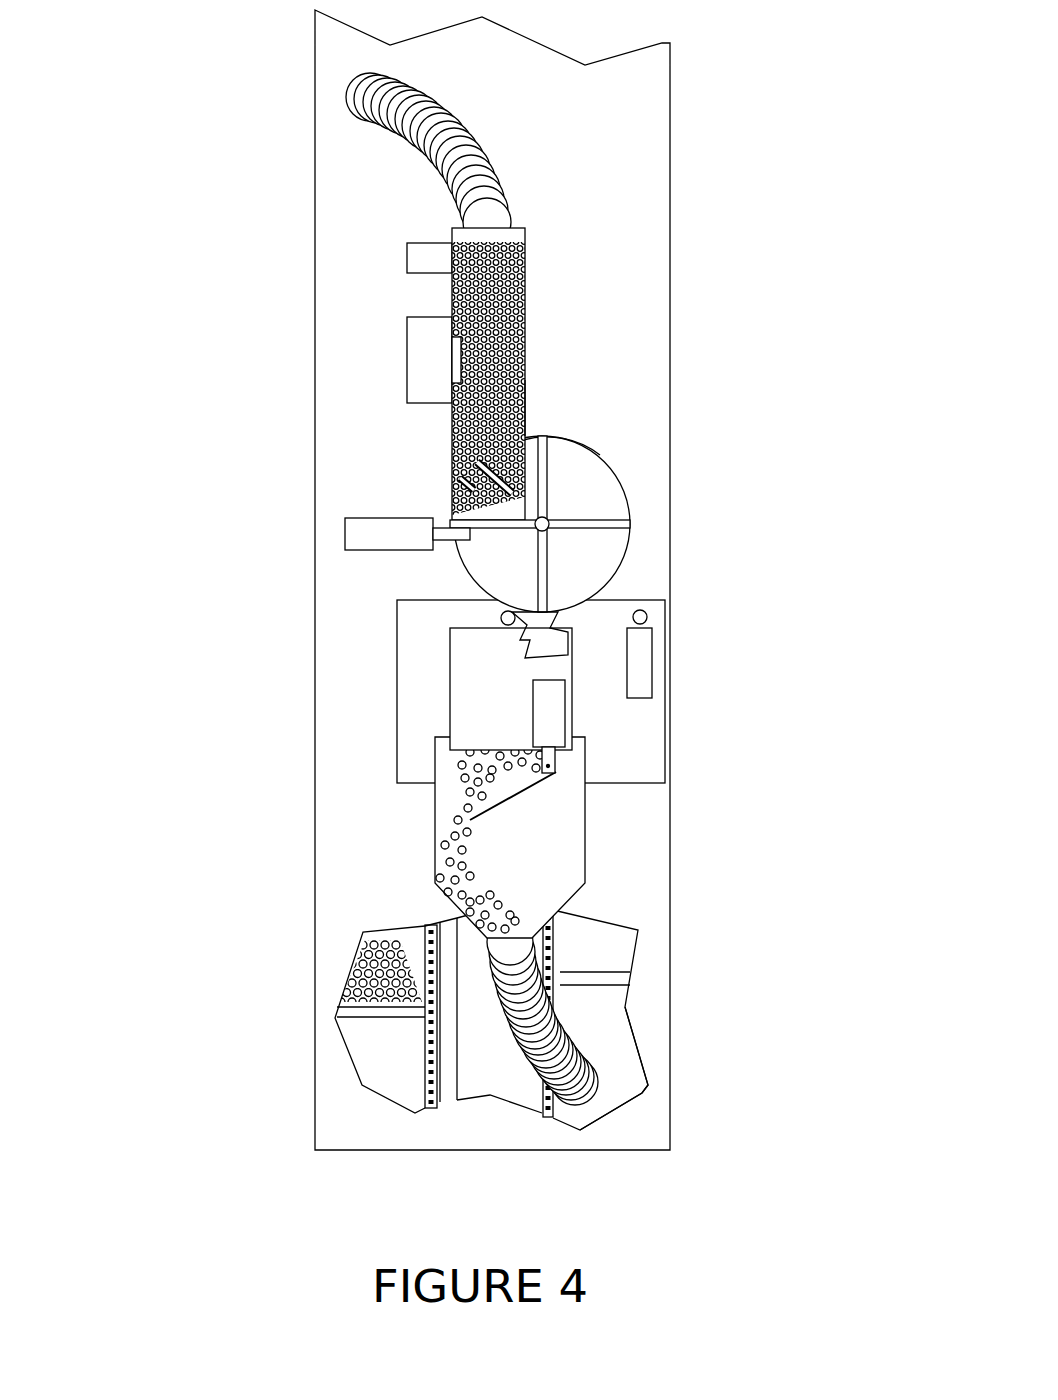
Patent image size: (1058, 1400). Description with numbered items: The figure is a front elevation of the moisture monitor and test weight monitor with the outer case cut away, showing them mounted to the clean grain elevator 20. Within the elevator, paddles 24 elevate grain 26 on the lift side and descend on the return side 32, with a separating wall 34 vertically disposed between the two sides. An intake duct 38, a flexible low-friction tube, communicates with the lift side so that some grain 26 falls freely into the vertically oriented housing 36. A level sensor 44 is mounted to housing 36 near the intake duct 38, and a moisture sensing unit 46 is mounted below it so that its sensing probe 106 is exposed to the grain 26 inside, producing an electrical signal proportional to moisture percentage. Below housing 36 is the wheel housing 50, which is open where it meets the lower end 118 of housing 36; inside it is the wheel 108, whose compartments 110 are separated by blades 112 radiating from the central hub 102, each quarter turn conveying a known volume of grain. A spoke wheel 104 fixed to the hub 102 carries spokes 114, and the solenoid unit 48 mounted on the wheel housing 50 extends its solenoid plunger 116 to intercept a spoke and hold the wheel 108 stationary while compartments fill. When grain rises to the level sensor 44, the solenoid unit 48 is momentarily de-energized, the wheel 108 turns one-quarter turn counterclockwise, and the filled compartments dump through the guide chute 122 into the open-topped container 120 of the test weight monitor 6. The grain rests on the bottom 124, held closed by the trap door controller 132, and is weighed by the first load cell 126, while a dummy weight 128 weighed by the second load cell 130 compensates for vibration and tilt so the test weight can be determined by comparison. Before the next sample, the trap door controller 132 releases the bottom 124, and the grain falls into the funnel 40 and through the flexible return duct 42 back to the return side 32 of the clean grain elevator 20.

The clean grain elevator 20 is at (430, 575).
The intake duct 38 is at (469, 157).
The level sensor 44 is at (322, 196).
The moisture sensing unit 46 is at (322, 310).
The test weight monitor 6 is at (445, 703).
The wheel housing 50 is at (629, 524).
The lower end of housing 118 is at (656, 359).
The housing 36 is at (550, 371).
The grain 26 is at (492, 622).
The wheel 108 is at (653, 374).
The sensing probe 106 is at (330, 384).
The blades 112 is at (417, 457).
The compartments 110 is at (398, 473).
The spokes 114 is at (670, 497).
The spoke wheel 104 is at (613, 491).
The central hub 102 is at (662, 474).
The solenoid unit 48 is at (320, 524).
The solenoid plunger 116 is at (341, 578).
The paddles 24 is at (488, 1020).
The separating wall 34 is at (510, 1067).
The return side 32 is at (665, 1068).
The return duct 42 is at (626, 1033).
The funnel 40 is at (598, 837).
The bottom 124 is at (626, 818).
The container 120 is at (627, 689).
The trap door controller 132 is at (648, 726).
The dummy weight 128 is at (727, 656).
The second load cell 130 is at (731, 599).
The first load cell 126 is at (342, 666).
The guide chute 122 is at (645, 601).